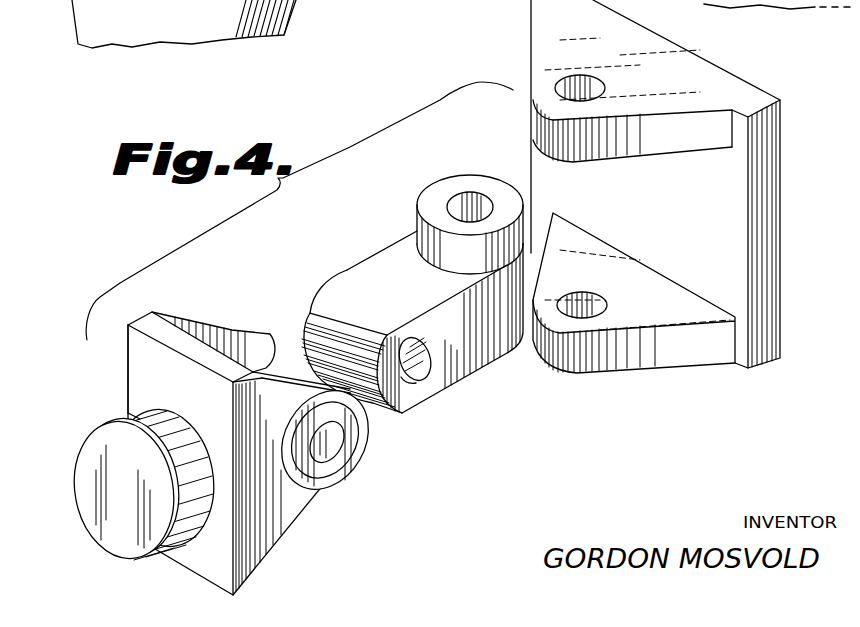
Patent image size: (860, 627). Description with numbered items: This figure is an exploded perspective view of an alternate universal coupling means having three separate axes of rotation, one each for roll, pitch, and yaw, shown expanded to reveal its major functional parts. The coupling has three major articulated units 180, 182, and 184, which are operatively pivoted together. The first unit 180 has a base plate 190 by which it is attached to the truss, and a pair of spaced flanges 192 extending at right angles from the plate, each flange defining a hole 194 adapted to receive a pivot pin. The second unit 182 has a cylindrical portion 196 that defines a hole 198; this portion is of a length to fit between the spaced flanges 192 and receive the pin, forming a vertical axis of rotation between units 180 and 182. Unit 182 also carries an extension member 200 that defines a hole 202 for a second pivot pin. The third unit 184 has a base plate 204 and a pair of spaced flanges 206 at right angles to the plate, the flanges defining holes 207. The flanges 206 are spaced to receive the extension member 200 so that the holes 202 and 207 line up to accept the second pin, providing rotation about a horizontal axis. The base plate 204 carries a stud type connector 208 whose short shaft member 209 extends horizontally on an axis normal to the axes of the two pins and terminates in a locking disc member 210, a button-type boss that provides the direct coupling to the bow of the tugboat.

The articulated unit 180 is at (680, 204).
The articulated unit 182 is at (412, 289).
The articulated unit 184 is at (212, 424).
The base plate 190 is at (782, 213).
The spaced flanges 192 is at (678, 138).
The hole 194 is at (572, 84).
The cylindrical portion 196 is at (468, 201).
The hole 198 is at (469, 202).
The extension member 200 is at (423, 393).
The hole 202 is at (406, 378).
The base plate 204 is at (135, 325).
The spaced flanges 206 is at (207, 325).
The holes 207 is at (327, 440).
The stud type connector 208 is at (128, 405).
The short shaft member 209 is at (165, 420).
The locking disc member 210 is at (128, 466).